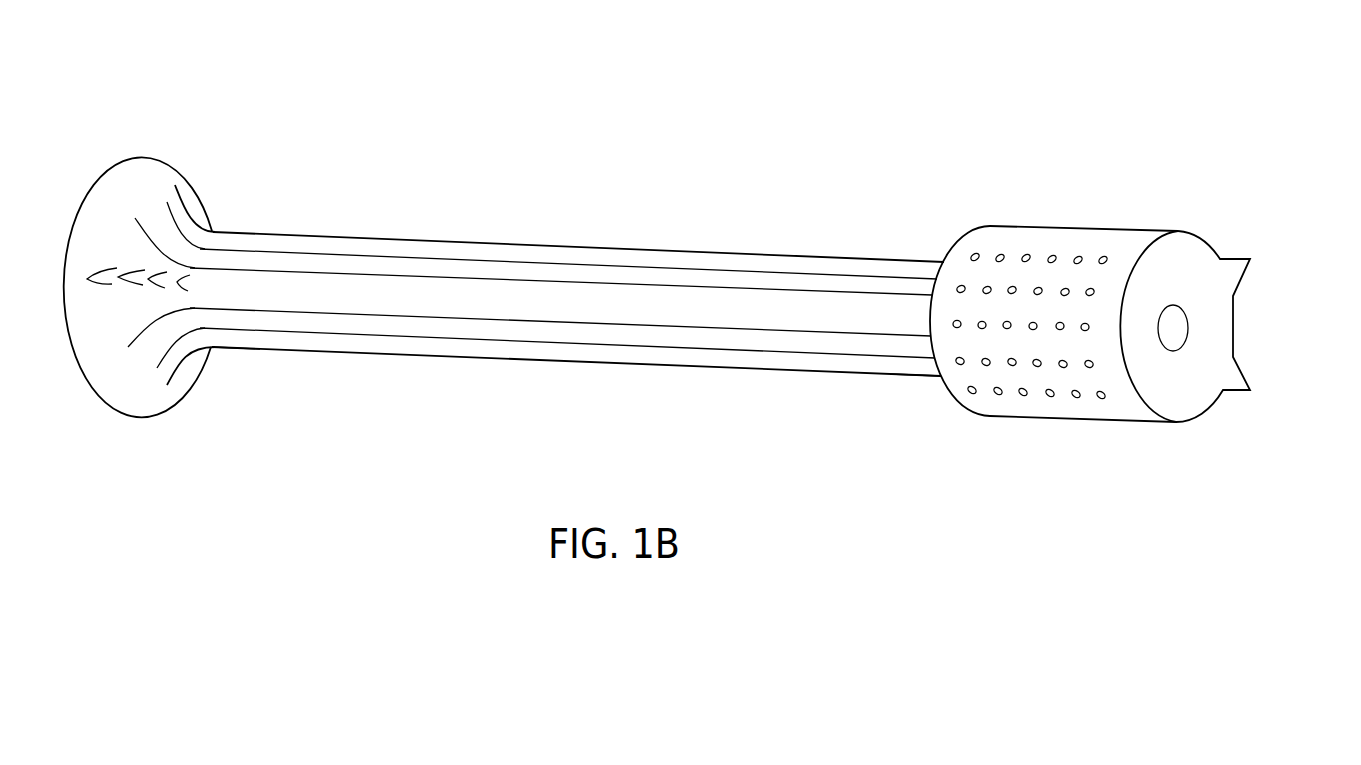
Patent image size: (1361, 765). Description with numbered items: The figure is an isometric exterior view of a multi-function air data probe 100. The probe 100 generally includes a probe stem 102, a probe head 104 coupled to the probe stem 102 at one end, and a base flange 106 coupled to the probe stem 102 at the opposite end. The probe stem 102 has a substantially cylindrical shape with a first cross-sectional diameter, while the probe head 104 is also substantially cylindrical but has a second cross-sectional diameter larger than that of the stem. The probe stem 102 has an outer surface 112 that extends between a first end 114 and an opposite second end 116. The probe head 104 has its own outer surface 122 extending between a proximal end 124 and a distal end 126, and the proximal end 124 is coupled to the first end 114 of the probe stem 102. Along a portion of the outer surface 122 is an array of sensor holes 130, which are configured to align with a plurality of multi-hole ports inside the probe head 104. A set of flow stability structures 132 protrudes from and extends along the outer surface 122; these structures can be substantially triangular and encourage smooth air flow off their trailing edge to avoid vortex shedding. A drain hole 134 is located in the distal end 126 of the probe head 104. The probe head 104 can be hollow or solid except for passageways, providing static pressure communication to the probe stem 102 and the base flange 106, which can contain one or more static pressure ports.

The multi-function air data probe 100 is at (727, 133).
The probe stem 102 is at (532, 360).
The probe head 104 is at (1098, 235).
The base flange 106 is at (160, 177).
The outer surface 112 is at (420, 287).
The first end 114 is at (918, 373).
The second end 116 is at (237, 342).
The outer surface 122 is at (1043, 243).
The proximal end 124 is at (958, 238).
The distal end 126 is at (1175, 408).
The sensor holes 130 is at (1093, 289).
The flow stability structures 132 is at (1247, 275).
The drain hole 134 is at (1180, 330).